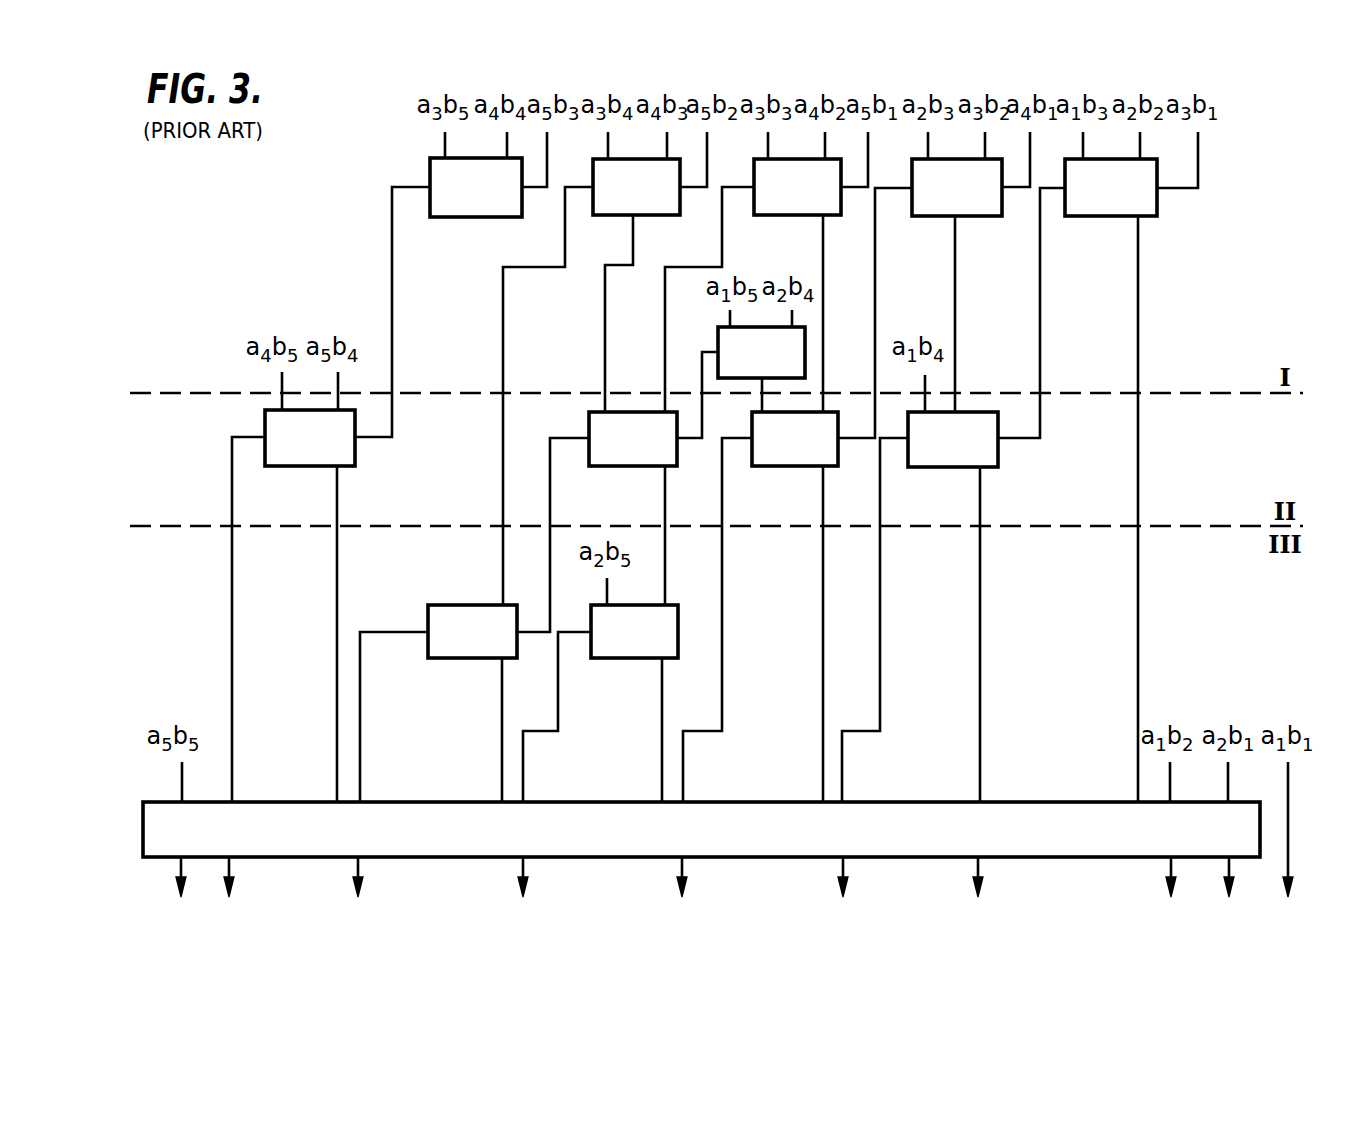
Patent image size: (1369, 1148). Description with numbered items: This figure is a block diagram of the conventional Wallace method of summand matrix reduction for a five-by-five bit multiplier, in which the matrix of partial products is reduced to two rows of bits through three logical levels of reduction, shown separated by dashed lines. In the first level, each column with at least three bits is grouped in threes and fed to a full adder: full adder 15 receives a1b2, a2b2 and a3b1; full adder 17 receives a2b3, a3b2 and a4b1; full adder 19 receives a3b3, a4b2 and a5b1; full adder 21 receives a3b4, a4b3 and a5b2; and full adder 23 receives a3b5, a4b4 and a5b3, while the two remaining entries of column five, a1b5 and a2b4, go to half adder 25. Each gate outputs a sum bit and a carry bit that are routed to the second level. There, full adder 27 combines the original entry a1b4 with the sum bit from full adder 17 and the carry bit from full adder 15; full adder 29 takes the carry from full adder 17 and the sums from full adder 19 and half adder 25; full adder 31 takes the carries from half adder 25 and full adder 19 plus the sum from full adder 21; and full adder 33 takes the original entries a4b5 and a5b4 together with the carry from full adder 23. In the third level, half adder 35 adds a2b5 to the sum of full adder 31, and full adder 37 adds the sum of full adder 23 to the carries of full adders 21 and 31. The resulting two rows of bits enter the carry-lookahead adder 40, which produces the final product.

The full adder 15 is at (1157, 200).
The full adder 17 is at (978, 217).
The full adder 19 is at (790, 217).
The full adder 21 is at (648, 217).
The full adder 23 is at (463, 218).
The half adder 25 is at (718, 329).
The full adder 27 is at (998, 465).
The full adder 29 is at (767, 468).
The full adder 31 is at (620, 468).
The full adder 33 is at (355, 462).
The half adder 35 is at (612, 660).
The full adder 37 is at (453, 660).
The carry-lookahead adder 40 is at (143, 833).